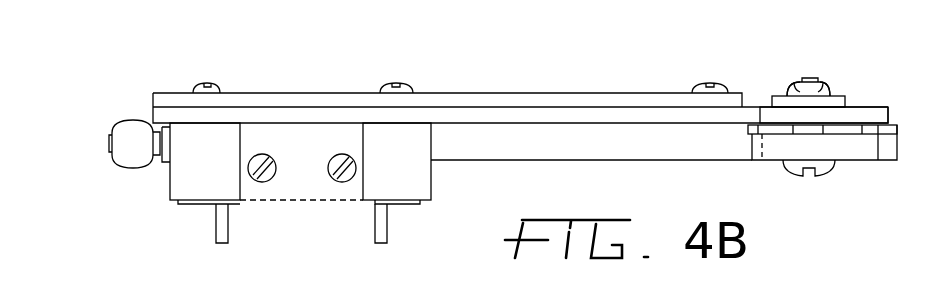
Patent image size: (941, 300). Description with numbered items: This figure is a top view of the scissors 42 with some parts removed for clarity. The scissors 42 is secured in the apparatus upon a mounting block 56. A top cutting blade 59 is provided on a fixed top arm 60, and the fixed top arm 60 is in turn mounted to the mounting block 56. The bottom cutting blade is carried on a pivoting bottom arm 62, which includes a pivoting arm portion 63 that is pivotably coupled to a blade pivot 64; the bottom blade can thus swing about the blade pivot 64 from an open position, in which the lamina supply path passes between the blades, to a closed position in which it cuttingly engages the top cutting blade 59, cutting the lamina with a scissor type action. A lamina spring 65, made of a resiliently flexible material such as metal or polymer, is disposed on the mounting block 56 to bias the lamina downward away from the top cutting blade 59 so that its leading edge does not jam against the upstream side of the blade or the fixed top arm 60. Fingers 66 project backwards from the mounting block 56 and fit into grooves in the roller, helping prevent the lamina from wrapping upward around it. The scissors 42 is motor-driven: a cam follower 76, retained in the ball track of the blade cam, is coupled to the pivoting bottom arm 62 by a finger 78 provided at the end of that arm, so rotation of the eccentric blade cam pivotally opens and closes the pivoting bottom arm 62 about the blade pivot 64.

The scissors 42 is at (563, 66).
The mounting block 56 is at (182, 180).
The top cutting blade 59 is at (250, 97).
The fixed top arm 60 is at (501, 115).
The pivoting bottom arm 62 is at (541, 147).
The pivoting arm portion 63 is at (849, 150).
The blade pivot 64 is at (796, 172).
The lamina spring 65 is at (303, 182).
The fingers 66 is at (220, 230).
The cam follower 76 is at (126, 120).
The finger 78 is at (107, 142).